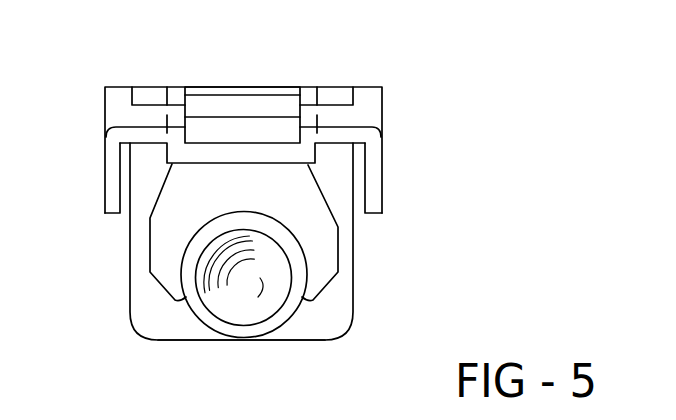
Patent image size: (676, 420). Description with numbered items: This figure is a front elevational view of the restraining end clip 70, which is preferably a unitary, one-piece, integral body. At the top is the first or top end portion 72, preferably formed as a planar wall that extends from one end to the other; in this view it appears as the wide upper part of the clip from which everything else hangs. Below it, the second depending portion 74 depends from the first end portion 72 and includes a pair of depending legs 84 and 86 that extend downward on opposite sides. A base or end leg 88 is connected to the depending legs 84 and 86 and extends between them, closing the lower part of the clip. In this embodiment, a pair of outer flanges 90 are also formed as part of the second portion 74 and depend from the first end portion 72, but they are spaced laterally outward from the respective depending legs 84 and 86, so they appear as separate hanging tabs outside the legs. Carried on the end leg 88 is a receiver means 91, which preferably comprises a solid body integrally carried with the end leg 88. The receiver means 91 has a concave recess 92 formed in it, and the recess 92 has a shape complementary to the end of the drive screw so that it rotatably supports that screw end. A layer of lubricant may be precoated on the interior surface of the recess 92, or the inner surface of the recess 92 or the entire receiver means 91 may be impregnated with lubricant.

The end clip 70 is at (135, 66).
The first or top end portion 72 is at (252, 48).
The second depending portion 74 is at (90, 253).
The depending leg 84 is at (147, 300).
The depending leg 86 is at (343, 294).
The base or end leg 88 is at (308, 322).
The outer flanges 90 is at (110, 178).
The receiver means 91 is at (240, 345).
The concave recess 92 is at (203, 302).